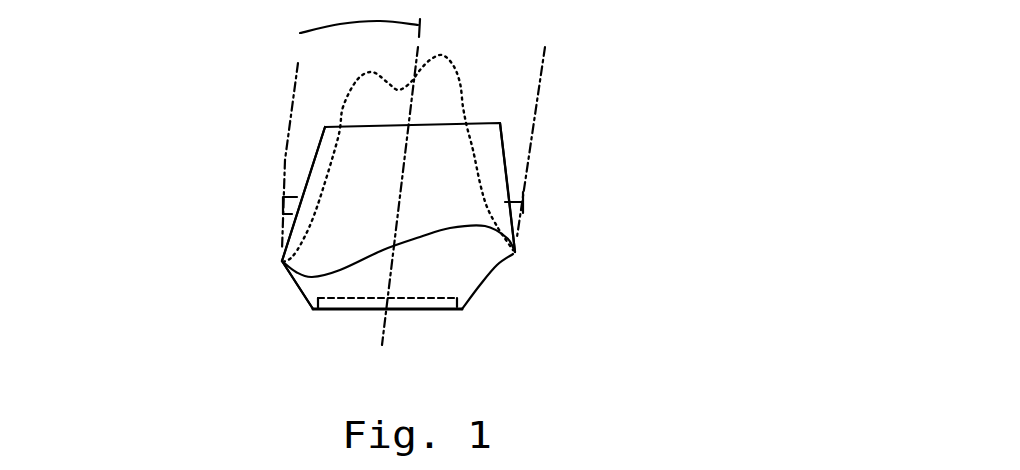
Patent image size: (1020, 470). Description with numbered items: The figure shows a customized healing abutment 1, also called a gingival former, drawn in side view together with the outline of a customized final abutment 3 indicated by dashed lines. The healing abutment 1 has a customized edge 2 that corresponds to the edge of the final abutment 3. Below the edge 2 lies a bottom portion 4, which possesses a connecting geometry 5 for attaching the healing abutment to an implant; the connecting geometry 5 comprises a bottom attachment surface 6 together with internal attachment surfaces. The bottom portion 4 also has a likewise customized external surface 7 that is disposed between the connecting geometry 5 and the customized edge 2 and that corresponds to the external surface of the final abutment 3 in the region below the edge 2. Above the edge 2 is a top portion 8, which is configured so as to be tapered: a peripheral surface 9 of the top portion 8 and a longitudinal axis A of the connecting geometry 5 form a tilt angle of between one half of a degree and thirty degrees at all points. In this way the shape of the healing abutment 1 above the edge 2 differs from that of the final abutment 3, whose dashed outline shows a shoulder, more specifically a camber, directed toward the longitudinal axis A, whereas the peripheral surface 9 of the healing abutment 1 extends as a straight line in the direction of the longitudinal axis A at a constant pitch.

The customized healing abutment 1 is at (503, 193).
The customized edge 2 is at (481, 228).
The customized final abutment 3 is at (442, 83).
The bottom portion 4 is at (472, 255).
The connecting geometry 5 is at (438, 310).
The bottom attachment surface 6 is at (320, 313).
The customized external surface 7 is at (300, 288).
The top portion 8 is at (492, 180).
The peripheral surface 9 is at (297, 197).
The longitudinal axis A is at (335, 35).